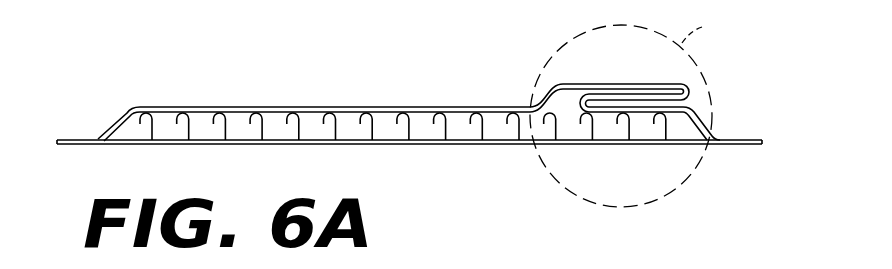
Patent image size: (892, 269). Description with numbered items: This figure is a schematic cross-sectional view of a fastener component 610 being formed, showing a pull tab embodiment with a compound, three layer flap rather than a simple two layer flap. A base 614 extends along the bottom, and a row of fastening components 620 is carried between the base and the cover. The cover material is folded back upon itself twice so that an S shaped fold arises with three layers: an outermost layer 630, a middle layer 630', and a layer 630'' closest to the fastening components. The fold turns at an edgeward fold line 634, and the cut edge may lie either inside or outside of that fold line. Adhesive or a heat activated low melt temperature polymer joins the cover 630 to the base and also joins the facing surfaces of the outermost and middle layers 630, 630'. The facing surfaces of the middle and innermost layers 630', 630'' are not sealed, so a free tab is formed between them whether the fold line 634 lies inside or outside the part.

The contact/connector assembly 610 is at (166, 85).
The base plate 614 is at (303, 145).
The spring contact fingers 620 is at (348, 130).
The outermost layer 630 is at (389, 105).
The middle layer 630' is at (631, 79).
The layer closest to the fastening components 630'' is at (731, 120).
The edgeward fold line 634 is at (694, 92).